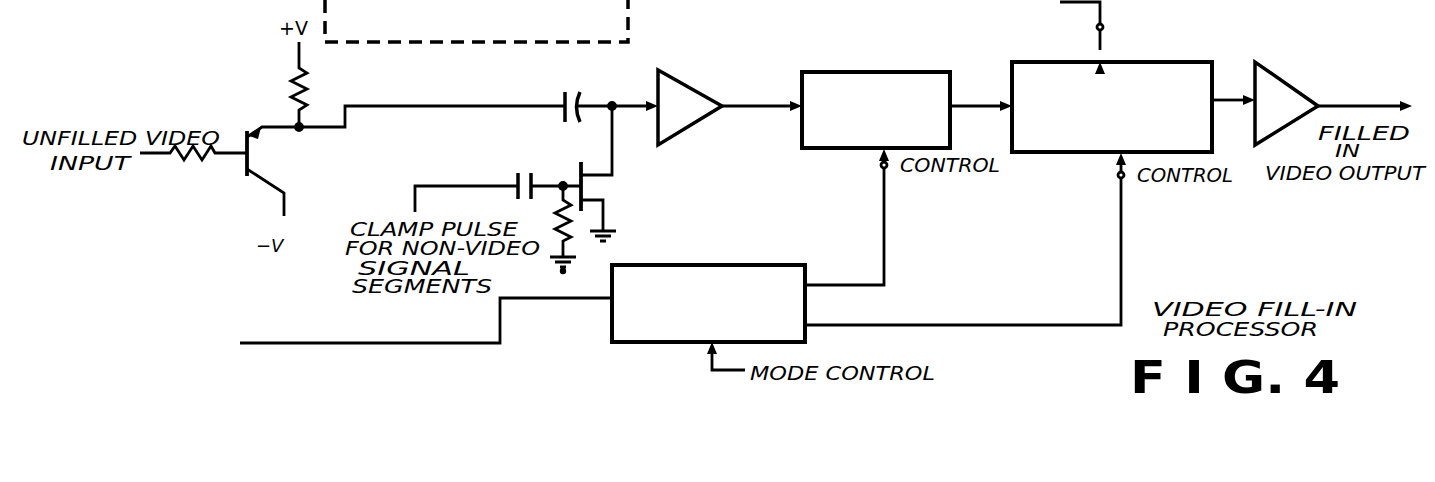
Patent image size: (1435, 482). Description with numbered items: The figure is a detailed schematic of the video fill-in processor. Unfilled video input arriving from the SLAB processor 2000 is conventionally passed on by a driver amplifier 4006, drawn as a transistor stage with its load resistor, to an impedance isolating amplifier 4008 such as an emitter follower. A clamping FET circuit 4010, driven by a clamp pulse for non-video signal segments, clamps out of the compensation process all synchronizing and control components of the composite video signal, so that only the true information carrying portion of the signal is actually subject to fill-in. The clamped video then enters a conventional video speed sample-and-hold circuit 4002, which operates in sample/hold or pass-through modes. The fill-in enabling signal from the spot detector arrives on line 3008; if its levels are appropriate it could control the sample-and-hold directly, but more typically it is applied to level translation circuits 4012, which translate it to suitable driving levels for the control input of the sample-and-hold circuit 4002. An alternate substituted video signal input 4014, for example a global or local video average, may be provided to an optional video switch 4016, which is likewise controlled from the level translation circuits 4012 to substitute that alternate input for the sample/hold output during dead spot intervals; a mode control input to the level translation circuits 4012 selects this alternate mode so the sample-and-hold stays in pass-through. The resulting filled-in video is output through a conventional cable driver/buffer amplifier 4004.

The driver amplifier 4006 is at (279, 89).
The SLAB processor 2000 is at (462, 44).
The impedance isolating amplifier 4008 is at (731, 68).
The sample-and-hold circuit 4002 is at (907, 72).
The clamping FET circuit 4010 is at (634, 170).
The level translation circuits 4012 is at (770, 238).
The alternate substituted video signal input 4014 is at (1104, 25).
The video switch 4016 is at (1198, 62).
The cable driver/buffer amplifier 4004 is at (1322, 68).
The fill-in enabling signal line 3008 is at (432, 344).